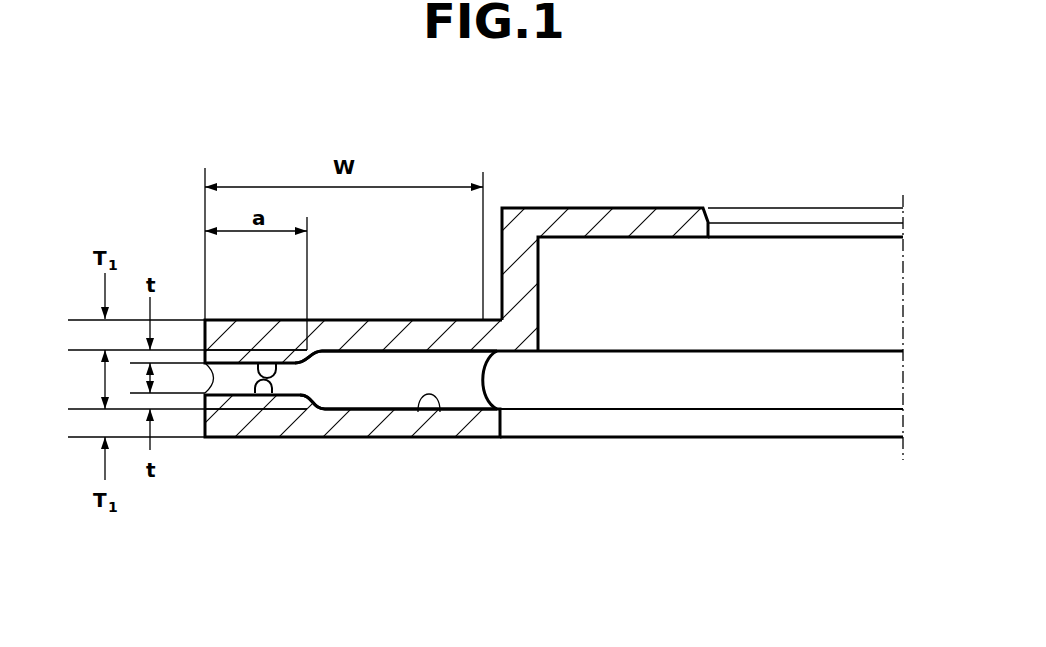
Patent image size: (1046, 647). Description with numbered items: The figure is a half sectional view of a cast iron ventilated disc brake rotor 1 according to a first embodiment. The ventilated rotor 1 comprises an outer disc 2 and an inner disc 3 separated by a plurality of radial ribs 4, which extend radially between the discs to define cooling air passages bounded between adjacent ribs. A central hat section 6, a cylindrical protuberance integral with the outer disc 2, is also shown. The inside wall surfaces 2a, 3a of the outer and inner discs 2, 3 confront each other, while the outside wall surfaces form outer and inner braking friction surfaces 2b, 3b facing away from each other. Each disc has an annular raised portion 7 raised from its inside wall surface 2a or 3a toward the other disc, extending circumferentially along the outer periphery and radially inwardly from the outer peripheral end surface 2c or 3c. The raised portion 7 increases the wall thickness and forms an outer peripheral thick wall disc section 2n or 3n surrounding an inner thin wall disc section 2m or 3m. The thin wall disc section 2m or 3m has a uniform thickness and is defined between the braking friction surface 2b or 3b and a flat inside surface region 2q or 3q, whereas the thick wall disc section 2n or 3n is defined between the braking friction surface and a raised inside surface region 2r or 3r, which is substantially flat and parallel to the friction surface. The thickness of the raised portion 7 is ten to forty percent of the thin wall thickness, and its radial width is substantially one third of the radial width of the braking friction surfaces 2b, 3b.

The ventilated rotor 1 is at (660, 200).
The outer disc 2 is at (455, 335).
The inner disc 3 is at (402, 415).
The inside wall surface of the outer disc 2a is at (355, 352).
The inside wall surface of the inner disc 3a is at (400, 410).
The outer braking friction surface 2b is at (345, 350).
The inner braking friction surface 3b is at (269, 405).
The outer peripheral end surface of the outer disc 2c is at (203, 333).
The outer peripheral end surface of the inner disc 3c is at (202, 430).
The inner thin wall disc section of the outer disc 2m is at (410, 335).
The inner thin wall disc section of the inner disc 3m is at (390, 415).
The outer peripheral thick wall disc section of the outer disc 2n is at (256, 352).
The outer peripheral thick wall disc section of the inner disc 3n is at (307, 420).
The flat inside surface region of the outer disc 2q is at (443, 352).
The flat inside surface region of the inner disc 3q is at (440, 412).
The raised inside surface region of the outer disc 2r is at (280, 363).
The raised inside surface region of the inner disc 3r is at (261, 398).
The radial ribs 4 is at (460, 393).
The central hat section 6 is at (530, 293).
The raised portion 7 is at (225, 350).